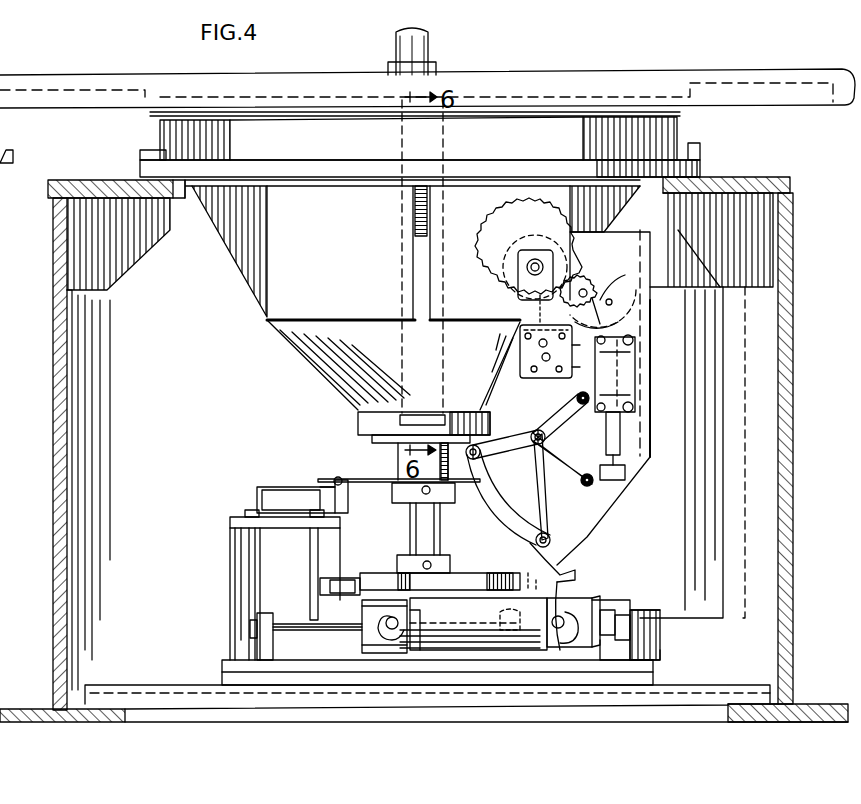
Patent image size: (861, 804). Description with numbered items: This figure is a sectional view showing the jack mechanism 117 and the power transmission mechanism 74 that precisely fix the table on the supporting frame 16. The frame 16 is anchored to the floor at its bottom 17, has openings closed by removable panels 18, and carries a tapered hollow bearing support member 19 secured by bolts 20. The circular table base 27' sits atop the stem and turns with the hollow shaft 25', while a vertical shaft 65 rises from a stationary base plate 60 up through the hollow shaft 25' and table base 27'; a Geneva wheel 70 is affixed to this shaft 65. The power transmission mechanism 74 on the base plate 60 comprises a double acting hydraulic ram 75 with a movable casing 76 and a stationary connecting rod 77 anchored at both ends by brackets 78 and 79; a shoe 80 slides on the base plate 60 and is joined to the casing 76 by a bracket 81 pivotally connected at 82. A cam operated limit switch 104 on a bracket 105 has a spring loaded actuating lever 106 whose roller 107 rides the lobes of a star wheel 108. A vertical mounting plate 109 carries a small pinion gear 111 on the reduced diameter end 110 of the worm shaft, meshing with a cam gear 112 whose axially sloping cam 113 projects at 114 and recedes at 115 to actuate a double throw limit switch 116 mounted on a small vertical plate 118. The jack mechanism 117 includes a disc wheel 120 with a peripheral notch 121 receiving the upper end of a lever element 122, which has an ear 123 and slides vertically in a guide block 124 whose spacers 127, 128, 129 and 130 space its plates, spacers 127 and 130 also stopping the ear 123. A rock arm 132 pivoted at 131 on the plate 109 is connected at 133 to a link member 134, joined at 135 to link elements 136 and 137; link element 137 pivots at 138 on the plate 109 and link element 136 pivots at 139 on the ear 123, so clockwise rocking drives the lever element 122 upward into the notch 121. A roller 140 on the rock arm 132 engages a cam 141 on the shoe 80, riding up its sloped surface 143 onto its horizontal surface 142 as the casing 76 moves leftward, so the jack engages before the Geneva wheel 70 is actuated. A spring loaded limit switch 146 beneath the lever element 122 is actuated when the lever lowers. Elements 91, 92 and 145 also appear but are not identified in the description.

The supporting frame 16 is at (121, 180).
The bottom of frame 17 is at (40, 723).
The removable panels 18 is at (386, 441).
The bearing support member 19 is at (242, 260).
The bolts 20 is at (150, 150).
The hollow shaft 25' is at (424, 440).
The circular table base 27' is at (427, 82).
The stationary base plate 60 is at (524, 690).
The vertical shaft 65 is at (430, 42).
The Geneva wheel 70 is at (463, 562).
The power transmission mechanism 74 is at (586, 586).
The double acting hydraulic ram 75 is at (592, 602).
The movable casing 76 is at (486, 620).
The stationary connecting rod 77 is at (290, 625).
The bracket 78 is at (258, 640).
The bracket 79 is at (623, 622).
The shoe 80 is at (468, 660).
The bracket 81 is at (415, 630).
The pivotal connection 82 is at (392, 617).
The block 91 is at (335, 578).
The spacer 92 is at (345, 580).
The cam operated electric switch 104 is at (340, 506).
The bracket 105 is at (232, 540).
The actuating lever 106 is at (325, 483).
The small roller 107 is at (340, 477).
The star wheel 108 is at (383, 492).
The vertical mounting plate 109 is at (646, 440).
The reduced diameter end 110 is at (604, 292).
The small pinion gear 111 is at (615, 300).
The cam gear 112 is at (529, 222).
The cam 113 is at (512, 302).
The projecting surface 114 is at (537, 235).
The receding surface 115 is at (581, 265).
The limit switch 116 is at (497, 240).
The jack mechanism 117 is at (642, 455).
The small vertical plate 118 is at (524, 322).
The disc wheel 120 is at (608, 298).
The peripheral notch 121 is at (651, 283).
The lever element 122 is at (625, 430).
The ear 123 is at (587, 370).
The guide block 124 is at (647, 358).
The spacer 127 is at (587, 350).
The spacer 128 is at (634, 340).
The spacer 129 is at (634, 406).
The spacer 130 is at (612, 430).
The pivot 131 is at (551, 539).
The rock arm 132 is at (520, 502).
The pivot connection 133 is at (474, 460).
The link member 134 is at (512, 440).
The pivot connection 135 is at (549, 460).
The link element 136 is at (576, 398).
The link element 137 is at (546, 437).
The pivot 138 is at (590, 487).
The pivot connection 139 is at (583, 410).
The roller 140 is at (556, 622).
The cam 141 is at (602, 650).
The horizontal surface 142 is at (614, 608).
The sloped surface 143 is at (557, 652).
The slot 145 is at (505, 614).
The spring loaded limit switch 146 is at (626, 474).